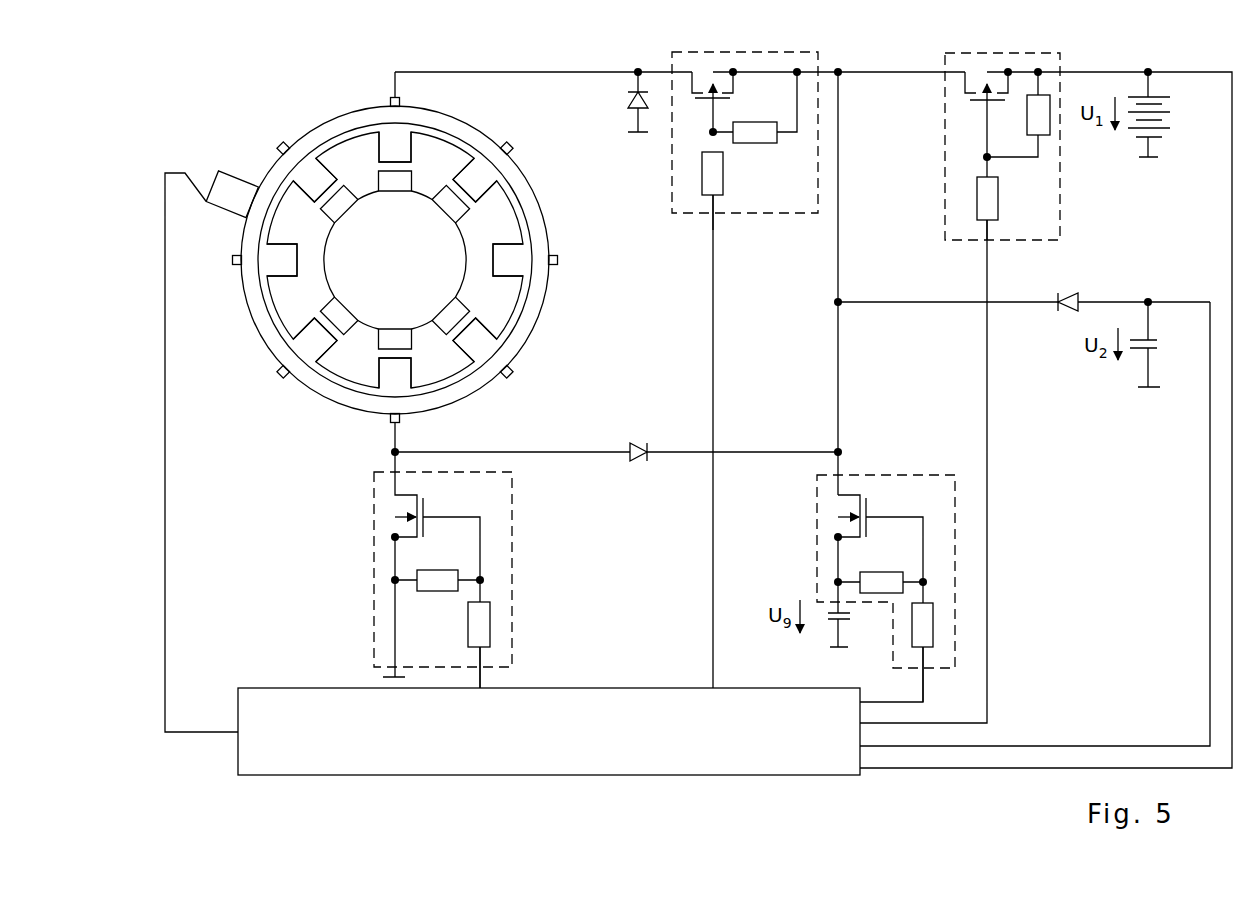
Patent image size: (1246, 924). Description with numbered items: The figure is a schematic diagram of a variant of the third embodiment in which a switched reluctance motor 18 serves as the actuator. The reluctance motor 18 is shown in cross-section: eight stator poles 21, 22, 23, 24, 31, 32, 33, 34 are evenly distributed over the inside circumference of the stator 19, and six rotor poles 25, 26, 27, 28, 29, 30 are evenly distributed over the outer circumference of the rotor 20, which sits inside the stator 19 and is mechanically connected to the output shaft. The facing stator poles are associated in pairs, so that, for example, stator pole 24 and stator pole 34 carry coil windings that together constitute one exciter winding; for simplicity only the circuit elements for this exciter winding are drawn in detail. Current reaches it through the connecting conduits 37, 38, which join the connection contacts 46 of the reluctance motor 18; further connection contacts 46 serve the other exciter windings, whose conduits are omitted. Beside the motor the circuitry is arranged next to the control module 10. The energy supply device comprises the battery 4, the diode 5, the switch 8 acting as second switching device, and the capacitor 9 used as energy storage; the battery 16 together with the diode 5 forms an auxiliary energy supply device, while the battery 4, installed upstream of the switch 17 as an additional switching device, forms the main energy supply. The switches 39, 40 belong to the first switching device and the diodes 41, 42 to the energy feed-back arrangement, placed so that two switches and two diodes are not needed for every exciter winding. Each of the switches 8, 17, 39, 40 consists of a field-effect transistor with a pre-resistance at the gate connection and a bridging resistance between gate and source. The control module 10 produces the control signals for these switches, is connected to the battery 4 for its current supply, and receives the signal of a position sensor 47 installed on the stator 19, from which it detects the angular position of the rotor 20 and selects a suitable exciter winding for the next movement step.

The battery 4 is at (1168, 97).
The diode 5 is at (1068, 297).
The switch 8 is at (885, 472).
The capacitor 9 is at (847, 619).
The control module 10 is at (578, 688).
The battery 16 is at (1157, 342).
The switch 17 is at (1010, 50).
The switched reluctance motor 18 is at (548, 180).
The stator 19 is at (528, 206).
The rotor 20 is at (395, 260).
The stator pole 21 is at (475, 180).
The stator pole 22 is at (509, 260).
The stator pole 23 is at (475, 340).
The stator pole 24 is at (395, 373).
The rotor pole 25 is at (395, 182).
The rotor pole 26 is at (453, 210).
The rotor pole 27 is at (453, 310).
The rotor pole 28 is at (395, 338).
The rotor pole 29 is at (336, 310).
The rotor pole 30 is at (336, 210).
The stator pole 31 is at (314, 340).
The stator pole 32 is at (279, 260).
The stator pole 33 is at (315, 180).
The stator pole 34 is at (395, 147).
The connecting conduit 37 is at (392, 86).
The connecting conduit 38 is at (392, 430).
The switch 39 is at (750, 50).
The switch 40 is at (516, 556).
The diode 41 is at (632, 104).
The diode 42 is at (644, 446).
The connection contacts 46 is at (284, 145).
The position sensor 47 is at (238, 170).